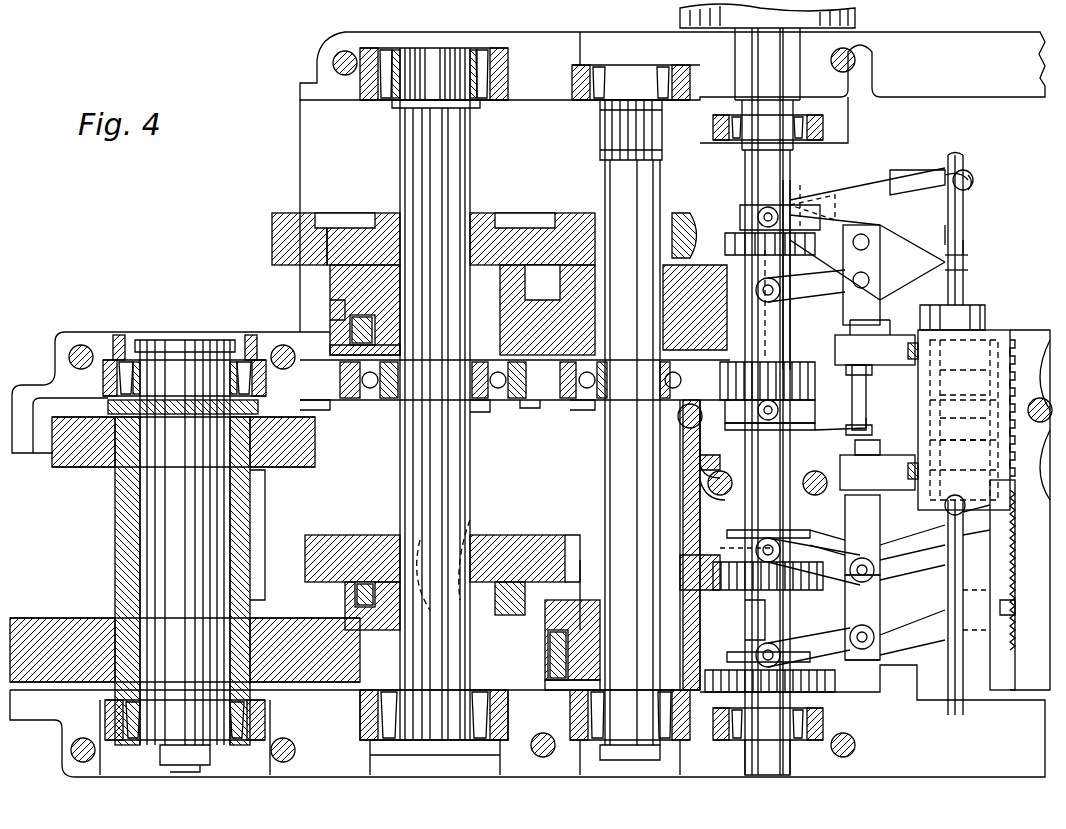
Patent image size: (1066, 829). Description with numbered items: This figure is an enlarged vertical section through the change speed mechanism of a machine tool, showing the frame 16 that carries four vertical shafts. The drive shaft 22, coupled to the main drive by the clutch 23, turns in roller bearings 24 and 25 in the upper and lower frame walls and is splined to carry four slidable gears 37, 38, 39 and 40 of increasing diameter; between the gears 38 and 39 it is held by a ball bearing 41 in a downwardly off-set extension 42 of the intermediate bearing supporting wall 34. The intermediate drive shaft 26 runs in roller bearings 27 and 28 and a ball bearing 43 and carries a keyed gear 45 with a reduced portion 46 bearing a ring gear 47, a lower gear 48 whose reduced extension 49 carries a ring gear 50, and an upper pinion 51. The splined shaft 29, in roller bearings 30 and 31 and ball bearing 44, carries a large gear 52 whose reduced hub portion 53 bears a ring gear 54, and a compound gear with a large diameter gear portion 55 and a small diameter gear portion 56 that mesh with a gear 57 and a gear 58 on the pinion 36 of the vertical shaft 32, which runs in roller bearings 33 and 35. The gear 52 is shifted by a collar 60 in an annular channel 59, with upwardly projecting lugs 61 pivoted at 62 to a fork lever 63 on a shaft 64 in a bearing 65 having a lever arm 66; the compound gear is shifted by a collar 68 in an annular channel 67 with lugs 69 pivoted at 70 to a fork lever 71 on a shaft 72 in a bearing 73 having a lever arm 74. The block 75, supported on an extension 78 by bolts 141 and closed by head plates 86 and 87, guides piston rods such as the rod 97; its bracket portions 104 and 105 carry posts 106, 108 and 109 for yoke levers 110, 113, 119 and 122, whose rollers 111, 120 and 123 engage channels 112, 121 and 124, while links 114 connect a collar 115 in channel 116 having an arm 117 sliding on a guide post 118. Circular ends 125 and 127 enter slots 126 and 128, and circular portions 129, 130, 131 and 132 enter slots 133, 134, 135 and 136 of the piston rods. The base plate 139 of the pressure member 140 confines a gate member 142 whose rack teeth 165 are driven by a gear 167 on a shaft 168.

The frame 16 is at (925, 45).
The drive shaft 22 is at (745, 168).
The clutch 23 is at (855, 16).
The roller bearing 24 is at (823, 128).
The roller bearing 25 is at (825, 723).
The intermediate drive shaft 26 is at (605, 182).
The roller bearing 27 is at (610, 66).
The roller bearing 28 is at (575, 715).
The splined shaft 29 is at (450, 148).
The roller bearing 30 is at (500, 75).
The roller bearing 31 is at (360, 718).
The vertical shaft 32 is at (200, 500).
The roller bearings 33 is at (262, 385).
The intermediate bearing supporting wall 34 is at (325, 395).
The roller bearings 35 is at (250, 720).
The pinion 36 is at (262, 550).
The gear 37 is at (800, 278).
The gear 38 is at (815, 383).
The gear 39 is at (805, 595).
The gear 40 is at (835, 683).
The ball bearing 41 is at (710, 458).
The downwardly off-set extension 42 is at (712, 490).
The ball bearing 43 is at (580, 405).
The ball bearing 44 is at (493, 410).
The gear 45 is at (558, 270).
The reduced portion 46 is at (548, 388).
The ring gear 47 is at (530, 405).
The gear 48 is at (580, 560).
The reduced extension 49 is at (560, 670).
The ring gear 50 is at (548, 655).
The pinion 51 is at (600, 128).
The large gear 52 is at (310, 215).
The reduced hub portion 53 is at (345, 312).
The ring gear 54 is at (340, 290).
The large diameter gear portion 55 is at (512, 545).
The small diameter gear portion 56 is at (548, 645).
The gear 57 is at (300, 445).
The gear 58 is at (290, 625).
The annular channel 59 is at (360, 350).
The collar 60 is at (352, 331).
The upwardly projecting lugs 61 is at (378, 212).
The pivotal connection 62 is at (478, 214).
The fork lever 63 is at (690, 215).
The shaft 64 is at (705, 210).
The bearing 65 is at (732, 215).
The lever arm 66 is at (890, 188).
The annular channel 67 is at (390, 585).
The collar 68 is at (340, 560).
The downwardly extending lugs 69 is at (480, 522).
The pivotal connection 70 is at (470, 545).
The fork lever 71 is at (590, 540).
The shaft 72 is at (700, 560).
The bearing 73 is at (756, 552).
The lever arm 74 is at (895, 546).
The frame or block 75 is at (980, 330).
The extension 78 is at (1035, 340).
The closure head plate 86 is at (955, 312).
The closure head plate 87 is at (1005, 505).
The piston rod 97 is at (965, 200).
The bracket portion 104 is at (880, 336).
The bracket portion 105 is at (880, 458).
The post 106 is at (882, 245).
The post 108 is at (880, 505).
The post 109 is at (880, 605).
The yoke lever 110 is at (850, 195).
The rollers 111 is at (805, 182).
The annular channel 112 is at (825, 200).
The yoke lever 113 is at (790, 315).
The links 114 is at (772, 347).
The collar 115 is at (805, 428).
The annular channel 116 is at (700, 420).
The arm 117 is at (868, 412).
The guide post 118 is at (868, 385).
The yoke lever 119 is at (830, 540).
The rollers 120 is at (760, 545).
The annular channel 121 is at (740, 548).
The yoke lever 122 is at (880, 645).
The rollers 123 is at (745, 632).
The annular channel 124 is at (745, 660).
The circular end 125 is at (975, 180).
The slot 126 is at (968, 172).
The circular end 127 is at (1000, 520).
The slot 128 is at (1000, 537).
The circular portion 129 is at (965, 235).
The circular portion 130 is at (968, 262).
The circular portion 131 is at (1000, 590).
The circular portion 132 is at (1000, 630).
The slot 133 is at (970, 250).
The slot 134 is at (968, 280).
The slot 135 is at (945, 570).
The slot 136 is at (945, 632).
The base plate 139 is at (985, 378).
The pressure member 140 is at (985, 395).
The bolts 141 is at (908, 352).
The gate member 142 is at (1005, 560).
The rack teeth 165 is at (1015, 607).
The gear 167 is at (985, 439).
The shaft 168 is at (985, 417).